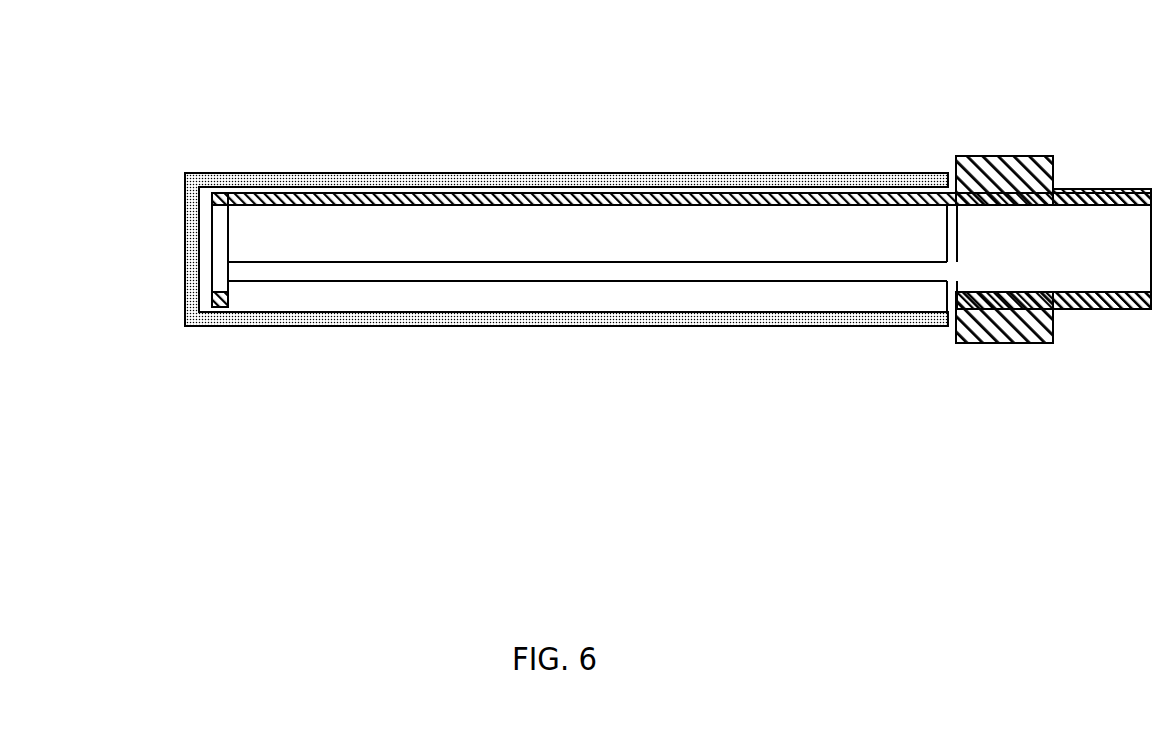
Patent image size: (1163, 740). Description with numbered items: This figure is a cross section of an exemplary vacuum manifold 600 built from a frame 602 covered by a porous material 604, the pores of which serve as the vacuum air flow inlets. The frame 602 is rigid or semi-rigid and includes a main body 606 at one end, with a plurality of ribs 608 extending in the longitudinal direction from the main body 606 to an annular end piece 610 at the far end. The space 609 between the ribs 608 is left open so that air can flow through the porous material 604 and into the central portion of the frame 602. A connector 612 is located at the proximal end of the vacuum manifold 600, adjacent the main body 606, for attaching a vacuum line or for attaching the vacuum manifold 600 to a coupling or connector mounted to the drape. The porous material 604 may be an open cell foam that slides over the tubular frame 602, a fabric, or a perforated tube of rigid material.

The vacuum manifold 600 is at (374, 96).
The frame 602 is at (669, 251).
The porous material 604 is at (538, 173).
The main body 606 is at (982, 157).
The ribs 608 is at (602, 200).
The space 609 is at (495, 242).
The annular end piece 610 is at (222, 305).
The connector 612 is at (1103, 188).